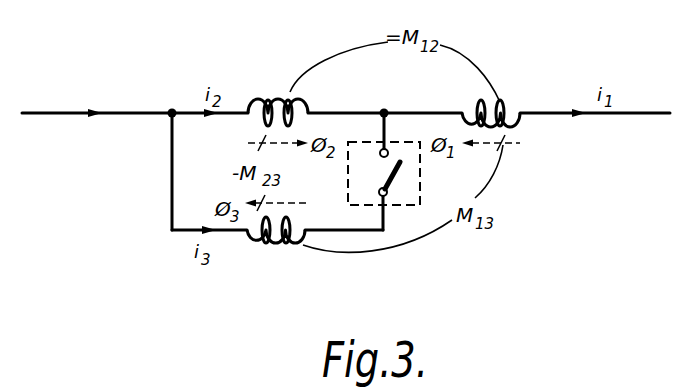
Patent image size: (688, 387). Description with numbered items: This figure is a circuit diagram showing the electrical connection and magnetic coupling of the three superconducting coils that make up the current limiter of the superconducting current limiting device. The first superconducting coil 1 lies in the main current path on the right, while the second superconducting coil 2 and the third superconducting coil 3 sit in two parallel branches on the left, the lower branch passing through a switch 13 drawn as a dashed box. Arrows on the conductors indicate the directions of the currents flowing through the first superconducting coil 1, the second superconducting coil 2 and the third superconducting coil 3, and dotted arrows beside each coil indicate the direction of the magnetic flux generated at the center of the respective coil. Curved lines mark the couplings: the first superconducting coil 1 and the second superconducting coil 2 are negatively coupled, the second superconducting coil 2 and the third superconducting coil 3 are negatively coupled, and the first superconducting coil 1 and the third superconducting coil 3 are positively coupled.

The first superconducting coil 1 is at (505, 103).
The second superconducting coil 2 is at (258, 100).
The third superconducting coil 3 is at (277, 245).
The switch 13 is at (390, 207).